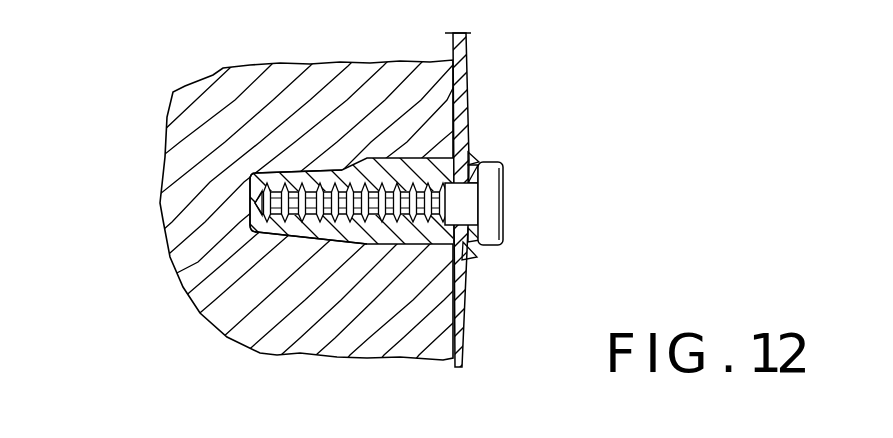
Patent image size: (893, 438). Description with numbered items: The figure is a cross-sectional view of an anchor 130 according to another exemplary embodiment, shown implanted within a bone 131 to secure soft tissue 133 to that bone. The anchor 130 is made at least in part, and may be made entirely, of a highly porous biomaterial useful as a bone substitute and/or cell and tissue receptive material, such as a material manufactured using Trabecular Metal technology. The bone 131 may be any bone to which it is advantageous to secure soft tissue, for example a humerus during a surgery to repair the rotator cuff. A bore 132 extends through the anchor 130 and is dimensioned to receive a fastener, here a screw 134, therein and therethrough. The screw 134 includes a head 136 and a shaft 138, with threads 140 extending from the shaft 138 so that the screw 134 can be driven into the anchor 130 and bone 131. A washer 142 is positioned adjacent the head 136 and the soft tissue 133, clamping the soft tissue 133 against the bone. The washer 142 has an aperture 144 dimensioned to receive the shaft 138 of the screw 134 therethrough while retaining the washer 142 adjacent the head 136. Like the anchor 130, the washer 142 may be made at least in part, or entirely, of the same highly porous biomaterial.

The anchor 130 is at (342, 160).
The bone 131 is at (205, 102).
The bore 132 is at (252, 207).
The soft tissue 133 is at (467, 72).
The screw 134 is at (522, 188).
The head 136 is at (493, 220).
The shaft 138 is at (366, 245).
The threads 140 is at (299, 230).
The washer 142 is at (480, 154).
The aperture 144 is at (460, 273).